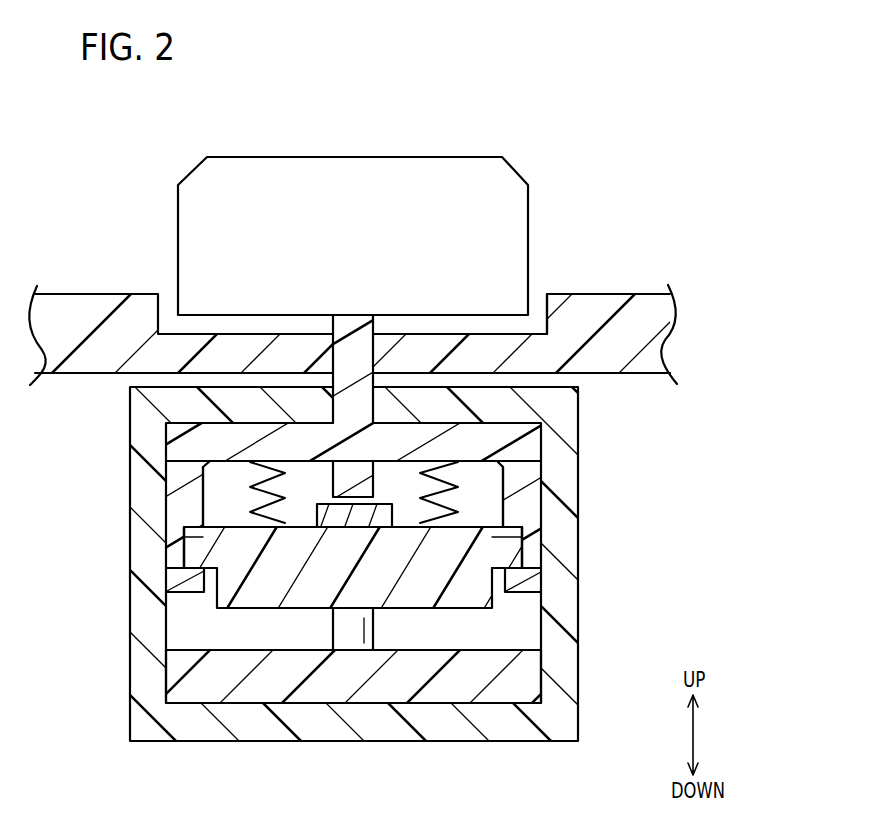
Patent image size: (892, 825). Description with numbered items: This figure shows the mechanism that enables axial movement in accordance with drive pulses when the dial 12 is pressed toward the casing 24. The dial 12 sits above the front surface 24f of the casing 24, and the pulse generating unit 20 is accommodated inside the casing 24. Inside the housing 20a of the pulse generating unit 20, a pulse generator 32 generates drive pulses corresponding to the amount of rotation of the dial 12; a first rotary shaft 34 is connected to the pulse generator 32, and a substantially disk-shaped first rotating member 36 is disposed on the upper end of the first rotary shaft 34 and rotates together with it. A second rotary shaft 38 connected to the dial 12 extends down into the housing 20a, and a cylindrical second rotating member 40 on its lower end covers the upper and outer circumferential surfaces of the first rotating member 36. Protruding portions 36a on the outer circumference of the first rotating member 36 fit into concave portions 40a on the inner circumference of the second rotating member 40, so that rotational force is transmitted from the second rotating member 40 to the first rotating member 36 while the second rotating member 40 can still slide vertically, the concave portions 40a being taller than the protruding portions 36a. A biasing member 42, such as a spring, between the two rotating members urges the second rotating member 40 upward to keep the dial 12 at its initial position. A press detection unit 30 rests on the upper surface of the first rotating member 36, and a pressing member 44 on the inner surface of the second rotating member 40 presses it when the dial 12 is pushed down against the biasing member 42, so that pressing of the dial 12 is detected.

The dial 12 is at (409, 156).
The casing 24 is at (92, 312).
The front surface 24f is at (582, 293).
The second rotary shaft 38 is at (350, 358).
The pulse generating unit 20 is at (580, 430).
The housing 20a is at (580, 462).
The second rotating member 40 is at (187, 445).
The concave portions 40a is at (199, 537).
The biasing member 42 is at (258, 506).
The pressing member 44 is at (356, 476).
The press detection unit 30 is at (361, 518).
The first rotating member 36 is at (457, 602).
The protruding portions 36a is at (194, 554).
The first rotary shaft 34 is at (347, 632).
The pulse generator 32 is at (325, 690).